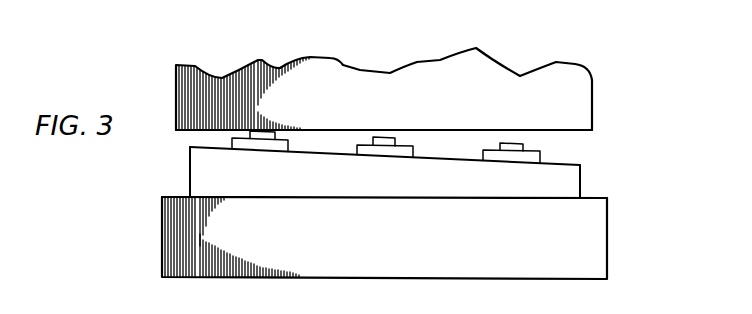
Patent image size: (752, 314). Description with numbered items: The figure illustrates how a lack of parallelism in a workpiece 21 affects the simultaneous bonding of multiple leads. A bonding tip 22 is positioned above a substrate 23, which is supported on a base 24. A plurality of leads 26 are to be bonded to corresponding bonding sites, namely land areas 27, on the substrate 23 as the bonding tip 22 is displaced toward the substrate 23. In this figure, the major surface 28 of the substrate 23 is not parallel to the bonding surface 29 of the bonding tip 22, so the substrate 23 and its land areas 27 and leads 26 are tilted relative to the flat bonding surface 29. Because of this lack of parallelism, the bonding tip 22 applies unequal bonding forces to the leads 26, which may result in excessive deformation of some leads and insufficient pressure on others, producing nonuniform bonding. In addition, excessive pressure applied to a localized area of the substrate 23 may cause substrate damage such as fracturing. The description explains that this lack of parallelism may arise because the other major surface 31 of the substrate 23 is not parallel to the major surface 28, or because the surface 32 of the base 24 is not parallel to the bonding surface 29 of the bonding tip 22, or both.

The workpiece 21 is at (606, 189).
The bonding tip 22 is at (582, 102).
The substrate 23 is at (197, 172).
The base 24 is at (590, 250).
The leads 26 is at (387, 140).
The land areas 27 is at (398, 153).
The major surface of the substrate 28 is at (570, 160).
The bonding surface of the bonding tip 29 is at (578, 133).
The major surface of the substrate 31 is at (293, 199).
The surface of base 32 is at (333, 195).